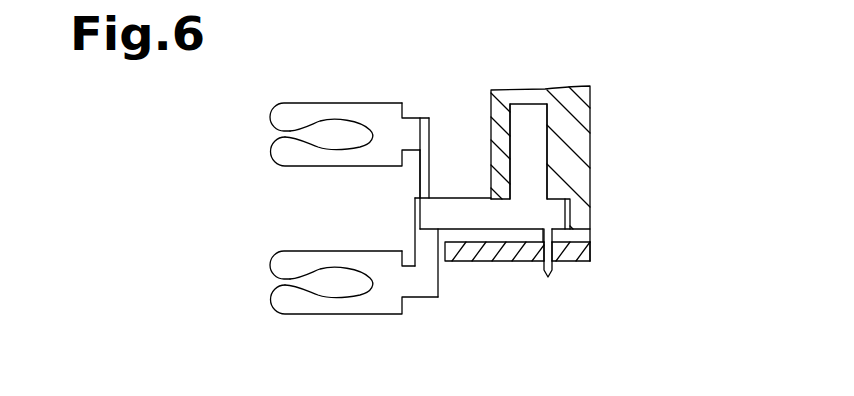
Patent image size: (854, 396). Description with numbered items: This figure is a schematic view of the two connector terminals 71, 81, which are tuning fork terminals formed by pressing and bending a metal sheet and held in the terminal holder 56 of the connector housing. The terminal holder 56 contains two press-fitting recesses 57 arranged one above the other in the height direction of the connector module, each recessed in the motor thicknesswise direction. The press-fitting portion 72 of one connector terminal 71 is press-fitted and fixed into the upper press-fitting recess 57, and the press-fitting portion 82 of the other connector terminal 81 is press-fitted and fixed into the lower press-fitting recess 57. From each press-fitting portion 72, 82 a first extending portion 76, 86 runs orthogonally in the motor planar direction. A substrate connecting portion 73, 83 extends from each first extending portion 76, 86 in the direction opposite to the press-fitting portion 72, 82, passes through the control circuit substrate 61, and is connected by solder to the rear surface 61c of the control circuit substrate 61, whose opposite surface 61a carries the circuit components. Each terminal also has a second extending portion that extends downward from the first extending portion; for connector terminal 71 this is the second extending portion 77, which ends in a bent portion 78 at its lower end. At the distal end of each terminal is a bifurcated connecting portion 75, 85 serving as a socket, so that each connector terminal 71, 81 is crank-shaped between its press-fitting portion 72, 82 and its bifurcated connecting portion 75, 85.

The terminal holder 56 is at (586, 168).
The press-fitting recess 57 is at (510, 162).
The control circuit substrate 61 is at (551, 264).
The surface 61a is at (578, 250).
The rear surface 61c is at (576, 256).
The connector terminal 71 is at (332, 144).
The press-fitting portion 72 is at (596, 151).
The substrate connecting portion 73 is at (580, 281).
The bifurcated connecting portion 75 is at (322, 110).
The first extending portion 76 is at (479, 262).
The second extending portion 77 is at (422, 166).
The bent portion 78 is at (430, 126).
The connector terminal 81 is at (379, 262).
The press-fitting portion 82 is at (540, 148).
The substrate connecting portion 83 is at (553, 278).
The bifurcated connecting portion 85 is at (322, 257).
The first extending portion 86 is at (456, 231).